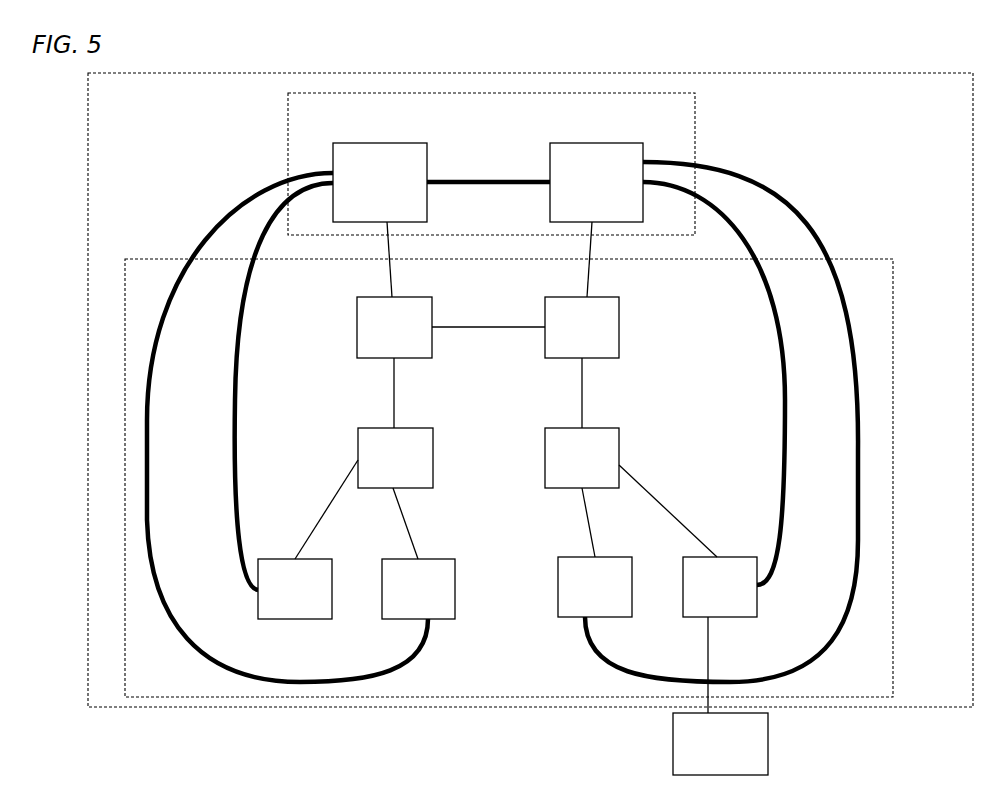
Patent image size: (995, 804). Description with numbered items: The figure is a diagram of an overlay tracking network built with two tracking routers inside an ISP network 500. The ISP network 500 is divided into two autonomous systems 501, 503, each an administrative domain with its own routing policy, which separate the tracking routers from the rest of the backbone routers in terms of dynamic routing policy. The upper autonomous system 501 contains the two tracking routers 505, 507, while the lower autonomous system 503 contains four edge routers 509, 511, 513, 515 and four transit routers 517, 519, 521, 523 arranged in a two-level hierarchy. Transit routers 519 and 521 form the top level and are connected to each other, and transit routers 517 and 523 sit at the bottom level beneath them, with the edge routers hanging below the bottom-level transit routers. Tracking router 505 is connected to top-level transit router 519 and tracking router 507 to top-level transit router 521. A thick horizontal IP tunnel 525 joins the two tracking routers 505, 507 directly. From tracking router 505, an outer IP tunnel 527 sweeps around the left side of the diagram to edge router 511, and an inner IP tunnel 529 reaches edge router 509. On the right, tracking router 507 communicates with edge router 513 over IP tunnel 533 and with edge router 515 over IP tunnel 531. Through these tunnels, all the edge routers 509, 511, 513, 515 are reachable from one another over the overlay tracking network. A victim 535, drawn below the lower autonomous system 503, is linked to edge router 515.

The ISP network 500 is at (908, 118).
The autonomous system 501 is at (697, 151).
The autonomous system 503 is at (893, 480).
The tracking router 505 is at (382, 143).
The tracking router 507 is at (595, 143).
The edge router 509 is at (298, 619).
The edge router 511 is at (455, 590).
The edge router 513 is at (558, 588).
The edge router 515 is at (716, 617).
The transit router 517 is at (358, 432).
The transit router 519 is at (432, 311).
The transit router 521 is at (619, 325).
The transit router 523 is at (619, 437).
The IP tunnel 525 is at (507, 180).
The IP tunnel 527 is at (162, 318).
The IP tunnel 529 is at (248, 283).
The IP tunnel 531 is at (777, 330).
The IP tunnel 533 is at (829, 290).
The victim 535 is at (673, 745).